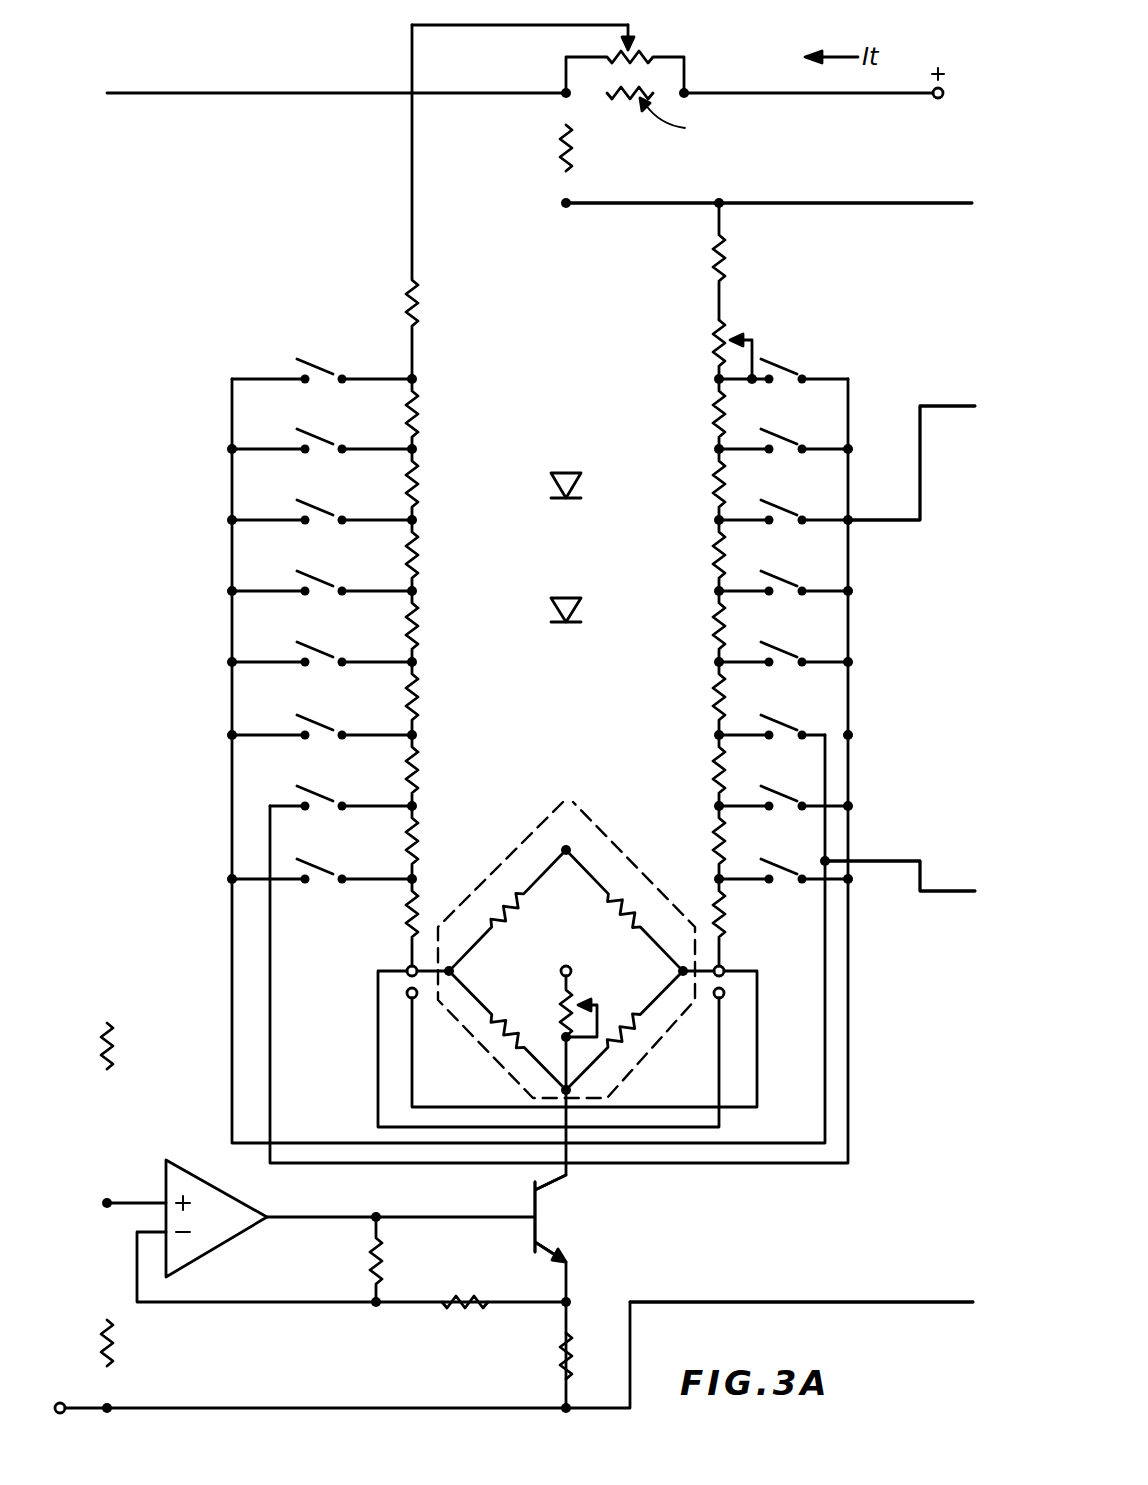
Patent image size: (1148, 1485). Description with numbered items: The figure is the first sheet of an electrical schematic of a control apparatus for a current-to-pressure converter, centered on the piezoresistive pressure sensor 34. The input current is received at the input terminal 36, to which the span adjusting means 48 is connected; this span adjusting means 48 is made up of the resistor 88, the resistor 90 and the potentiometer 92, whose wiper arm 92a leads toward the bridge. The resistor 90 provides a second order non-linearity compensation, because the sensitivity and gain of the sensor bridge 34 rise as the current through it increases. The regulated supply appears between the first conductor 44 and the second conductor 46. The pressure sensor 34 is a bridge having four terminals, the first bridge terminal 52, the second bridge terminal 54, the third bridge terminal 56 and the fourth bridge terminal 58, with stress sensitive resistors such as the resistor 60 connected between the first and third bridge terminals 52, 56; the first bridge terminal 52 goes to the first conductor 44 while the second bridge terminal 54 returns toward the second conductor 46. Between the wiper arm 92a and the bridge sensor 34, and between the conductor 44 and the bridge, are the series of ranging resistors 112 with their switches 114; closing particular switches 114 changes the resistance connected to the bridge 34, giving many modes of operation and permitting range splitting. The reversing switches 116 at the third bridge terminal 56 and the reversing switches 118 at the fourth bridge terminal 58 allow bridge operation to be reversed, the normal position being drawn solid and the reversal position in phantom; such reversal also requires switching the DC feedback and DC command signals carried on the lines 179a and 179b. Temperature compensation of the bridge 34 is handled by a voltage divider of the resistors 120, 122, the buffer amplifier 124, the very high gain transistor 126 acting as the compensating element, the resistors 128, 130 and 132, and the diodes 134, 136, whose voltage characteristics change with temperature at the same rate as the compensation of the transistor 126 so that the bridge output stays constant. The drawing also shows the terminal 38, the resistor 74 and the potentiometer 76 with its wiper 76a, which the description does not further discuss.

The pressure sensor 34 is at (566, 930).
The input terminal 36 is at (936, 100).
The output terminal 38 is at (63, 1402).
The first conductor 44 is at (840, 203).
The second conductor 46 is at (876, 1302).
The span adjusting means 48 is at (679, 122).
The first bridge terminal 52 is at (566, 857).
The second bridge terminal 54 is at (598, 1090).
The third bridge terminal 56 is at (456, 968).
The fourth bridge terminal 58 is at (678, 971).
The stress sensitive resistor 60 is at (506, 920).
The resistor 74 is at (728, 258).
The potentiometer 76 is at (732, 340).
The potentiometer wiper 76a is at (755, 355).
The resistor 88 is at (657, 90).
The resistor 90 is at (560, 143).
The potentiometer 92 is at (648, 60).
The wiper arm 92a is at (537, 27).
The ranging resistors 112 is at (415, 555).
The switches 114 is at (322, 440).
The reversing switches 116 is at (415, 965).
The reversing switches 118 is at (726, 968).
The resistor 120 is at (104, 1057).
The resistor 122 is at (115, 1350).
The buffer amplifier 124 is at (210, 1255).
The transistor 126 is at (548, 1225).
The resistor 128 is at (386, 1262).
The resistor 130 is at (462, 1312).
The resistor 132 is at (560, 1352).
The diode 134 is at (572, 468).
The diode 136 is at (552, 607).
The line 179a is at (945, 405).
The line 179b is at (892, 861).